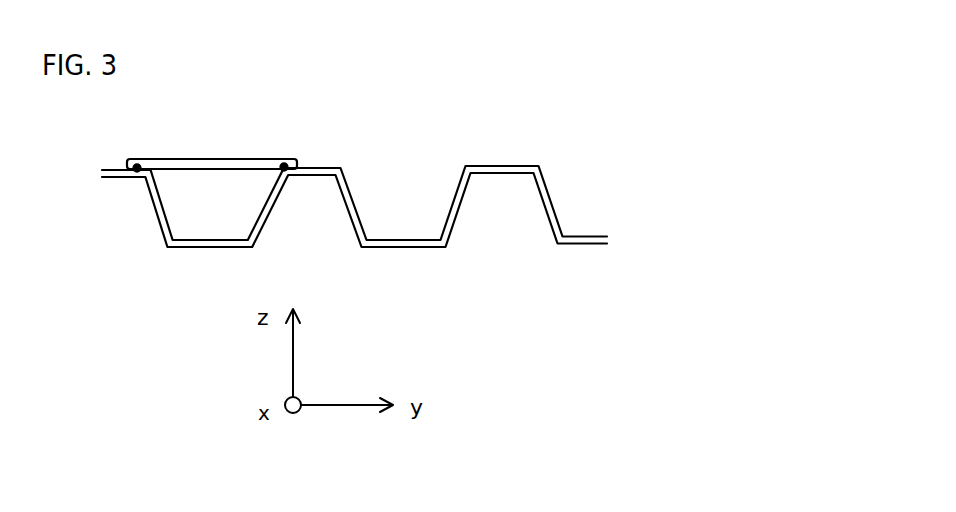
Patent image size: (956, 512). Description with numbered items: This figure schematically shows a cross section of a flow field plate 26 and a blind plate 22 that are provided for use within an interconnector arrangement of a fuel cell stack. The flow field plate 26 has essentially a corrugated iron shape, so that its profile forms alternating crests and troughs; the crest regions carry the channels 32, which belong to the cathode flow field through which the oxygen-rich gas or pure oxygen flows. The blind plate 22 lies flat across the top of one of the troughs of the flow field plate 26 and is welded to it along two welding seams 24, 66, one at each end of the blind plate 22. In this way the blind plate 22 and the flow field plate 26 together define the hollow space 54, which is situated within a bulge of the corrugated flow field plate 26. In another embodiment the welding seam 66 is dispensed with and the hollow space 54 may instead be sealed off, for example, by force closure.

The blind plate 22 is at (238, 158).
The welding seam 24 is at (137, 164).
The flow field plate 26 is at (543, 198).
The channels 32 is at (319, 223).
The hollow space 54 is at (223, 212).
The welding seam 66 is at (286, 164).